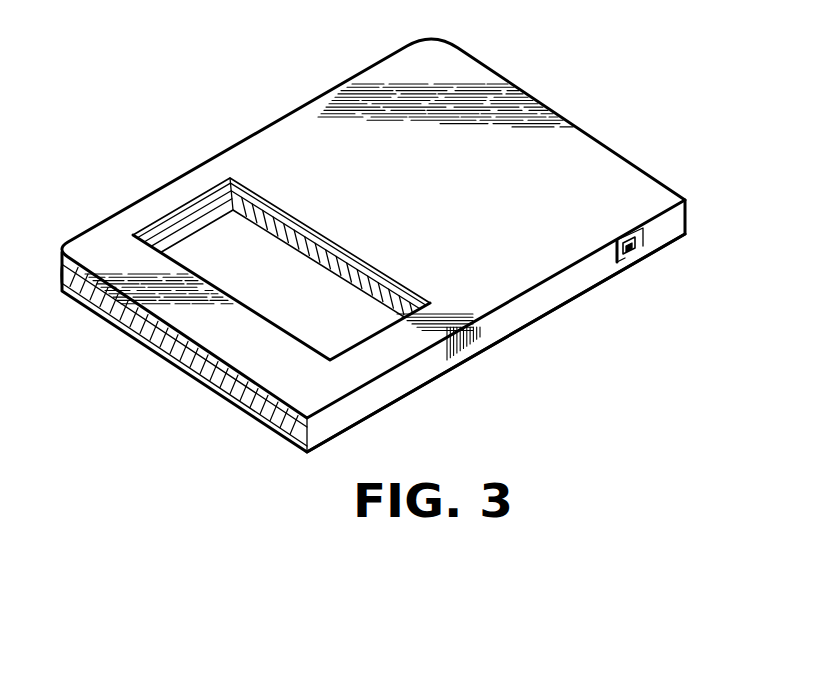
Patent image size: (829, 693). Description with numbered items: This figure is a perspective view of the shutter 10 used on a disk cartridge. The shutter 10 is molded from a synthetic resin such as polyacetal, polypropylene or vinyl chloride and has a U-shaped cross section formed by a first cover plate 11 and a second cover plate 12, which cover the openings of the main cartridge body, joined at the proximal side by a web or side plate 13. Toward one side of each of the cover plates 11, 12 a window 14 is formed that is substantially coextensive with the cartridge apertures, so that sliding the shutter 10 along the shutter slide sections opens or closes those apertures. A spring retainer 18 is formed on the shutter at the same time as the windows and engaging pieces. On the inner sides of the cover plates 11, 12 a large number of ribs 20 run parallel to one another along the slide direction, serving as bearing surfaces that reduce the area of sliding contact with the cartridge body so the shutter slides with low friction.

The shutter 10 is at (510, 100).
The first cover plate 11 is at (105, 245).
The second cover plate 12 is at (88, 318).
The side plate 13 is at (540, 302).
The window 14 is at (198, 204).
The spring retainer 18 is at (633, 252).
The ribs 20 is at (163, 348).